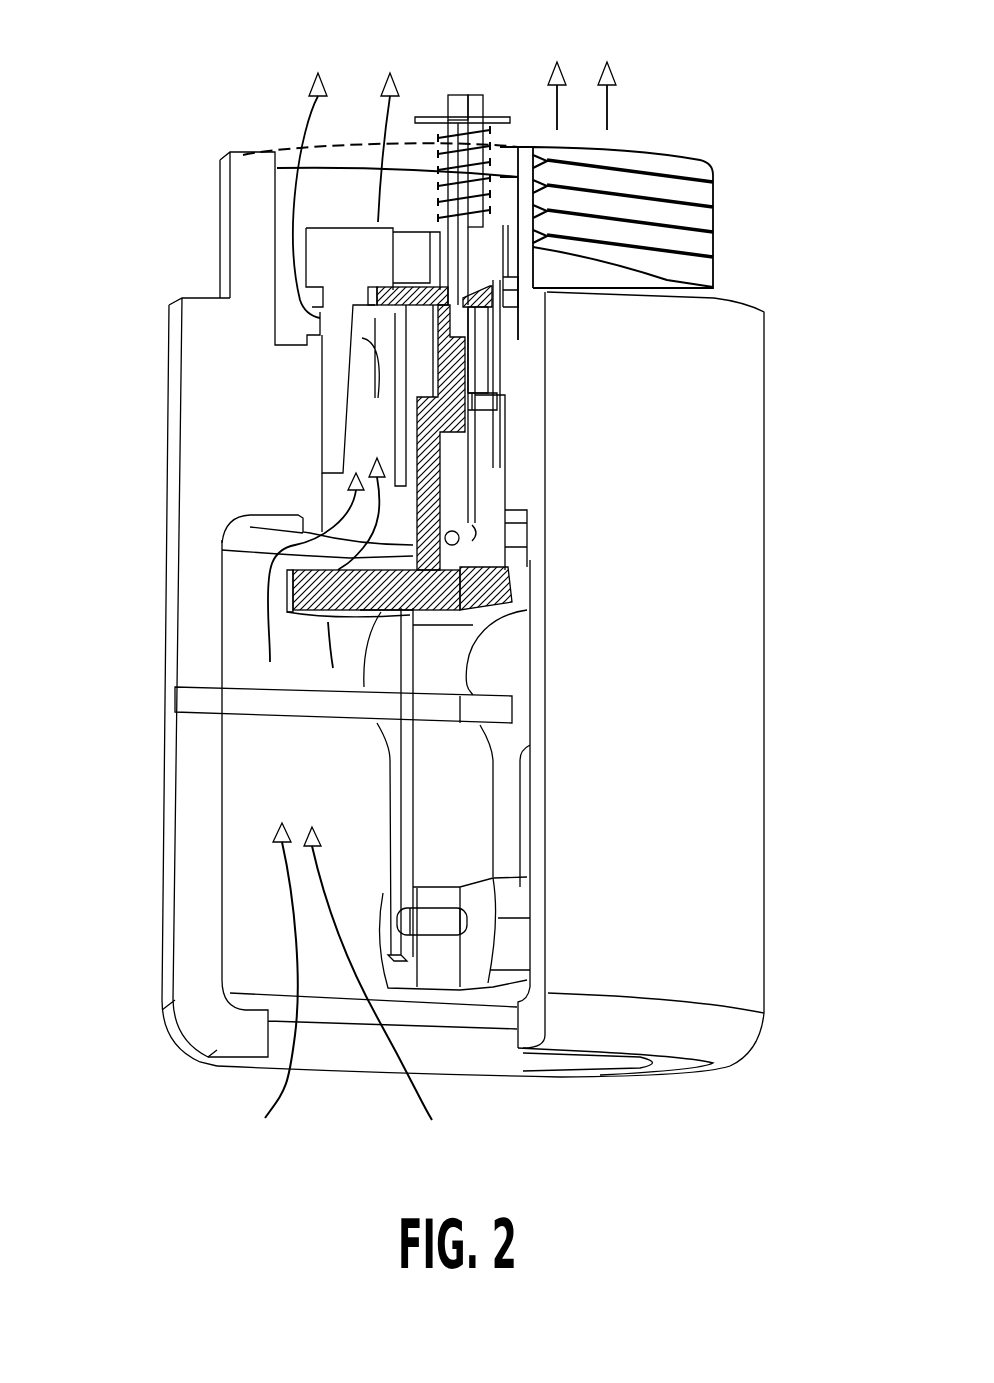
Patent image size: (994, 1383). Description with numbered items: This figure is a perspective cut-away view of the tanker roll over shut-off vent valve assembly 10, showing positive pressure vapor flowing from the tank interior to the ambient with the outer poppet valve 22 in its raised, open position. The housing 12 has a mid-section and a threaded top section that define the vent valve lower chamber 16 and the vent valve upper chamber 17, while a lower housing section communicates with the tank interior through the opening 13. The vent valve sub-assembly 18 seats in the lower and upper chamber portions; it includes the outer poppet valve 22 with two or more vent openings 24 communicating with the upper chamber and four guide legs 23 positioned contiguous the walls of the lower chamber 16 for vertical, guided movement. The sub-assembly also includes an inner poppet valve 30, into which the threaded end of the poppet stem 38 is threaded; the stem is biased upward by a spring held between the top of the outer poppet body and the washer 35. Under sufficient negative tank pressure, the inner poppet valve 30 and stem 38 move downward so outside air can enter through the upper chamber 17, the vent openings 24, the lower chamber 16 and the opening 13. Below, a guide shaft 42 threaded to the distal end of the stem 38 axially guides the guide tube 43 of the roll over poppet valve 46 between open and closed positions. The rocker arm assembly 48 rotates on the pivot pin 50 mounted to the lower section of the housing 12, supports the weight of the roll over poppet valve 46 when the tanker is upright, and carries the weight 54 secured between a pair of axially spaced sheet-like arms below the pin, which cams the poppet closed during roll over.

The tanker roll over shut-off vent valve assembly 10 is at (774, 147).
The housing 12 is at (680, 613).
The opening 13 is at (498, 1057).
The vent valve lower passageway or chamber 16 is at (381, 451).
The vent valve upper passageway or chamber 17 is at (343, 212).
The vent valve sub-assembly 18 is at (494, 251).
The outer poppet valve 22 is at (336, 282).
The guide legs 23 is at (330, 395).
The vent openings 24 is at (327, 358).
The inner poppet valve 30 is at (312, 322).
The washer 35 is at (498, 115).
The poppet stem 38 is at (462, 95).
The guide shaft 42 is at (477, 360).
The guide tube 43 is at (495, 488).
The roll over poppet valve 46 is at (350, 592).
The rocker arm assembly 48 is at (495, 665).
The pivot pin 50 is at (193, 703).
The weight 54 is at (515, 942).